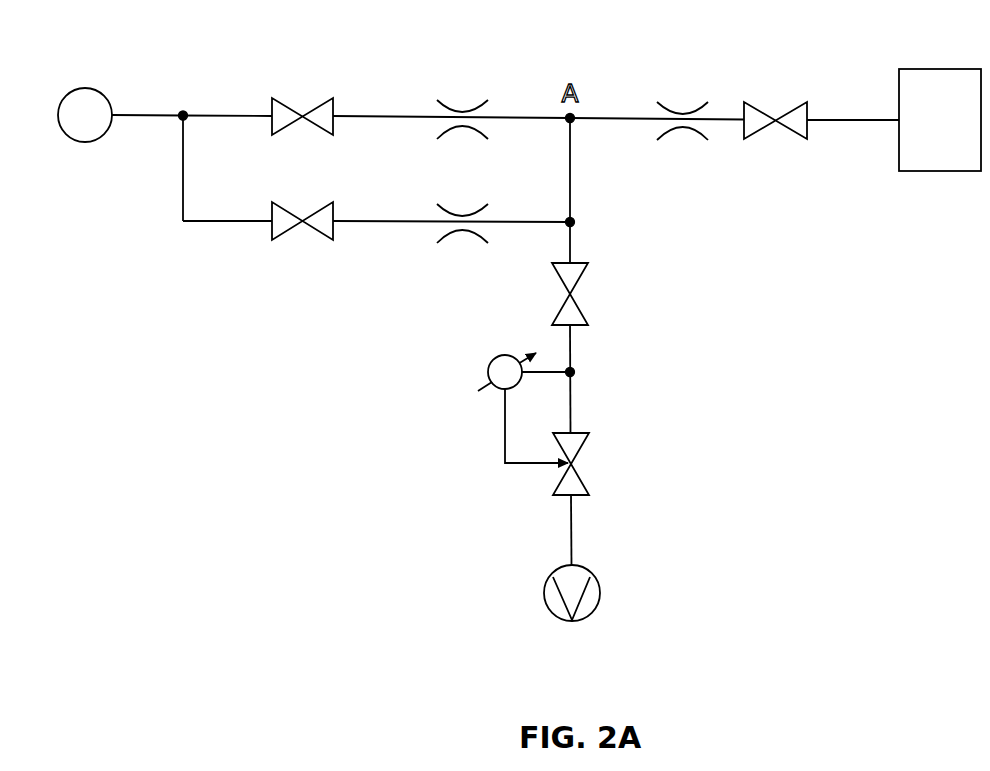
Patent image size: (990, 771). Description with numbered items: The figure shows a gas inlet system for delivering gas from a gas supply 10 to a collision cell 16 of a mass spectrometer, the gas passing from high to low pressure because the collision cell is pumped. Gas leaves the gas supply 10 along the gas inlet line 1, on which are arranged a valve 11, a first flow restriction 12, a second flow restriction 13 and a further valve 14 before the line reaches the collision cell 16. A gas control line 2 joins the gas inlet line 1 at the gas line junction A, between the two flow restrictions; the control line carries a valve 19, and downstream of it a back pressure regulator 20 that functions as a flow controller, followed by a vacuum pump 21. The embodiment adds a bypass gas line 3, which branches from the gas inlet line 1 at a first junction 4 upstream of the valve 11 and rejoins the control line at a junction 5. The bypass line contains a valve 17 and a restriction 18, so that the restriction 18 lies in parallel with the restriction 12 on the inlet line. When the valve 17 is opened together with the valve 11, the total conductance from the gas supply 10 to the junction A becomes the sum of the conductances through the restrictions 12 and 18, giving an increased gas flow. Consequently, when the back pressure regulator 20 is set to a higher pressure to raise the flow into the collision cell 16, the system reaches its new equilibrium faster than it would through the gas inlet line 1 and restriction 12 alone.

The gas inlet line 1 is at (388, 96).
The gas control line 2 is at (582, 353).
The bypass gas line 3 is at (196, 239).
The first junction 4 is at (176, 100).
The junction 5 is at (591, 235).
The gas supply 10 is at (97, 76).
The valve 11 is at (314, 85).
The first flow restriction 12 is at (476, 85).
The second flow restriction 13 is at (697, 91).
The valve 14 is at (789, 91).
The collision cell 16 is at (952, 131).
The valve 17 is at (316, 271).
The restriction 18 is at (476, 275).
The valve 19 is at (616, 303).
The back pressure regulator 20 is at (512, 446).
The vacuum pump 21 is at (505, 606).